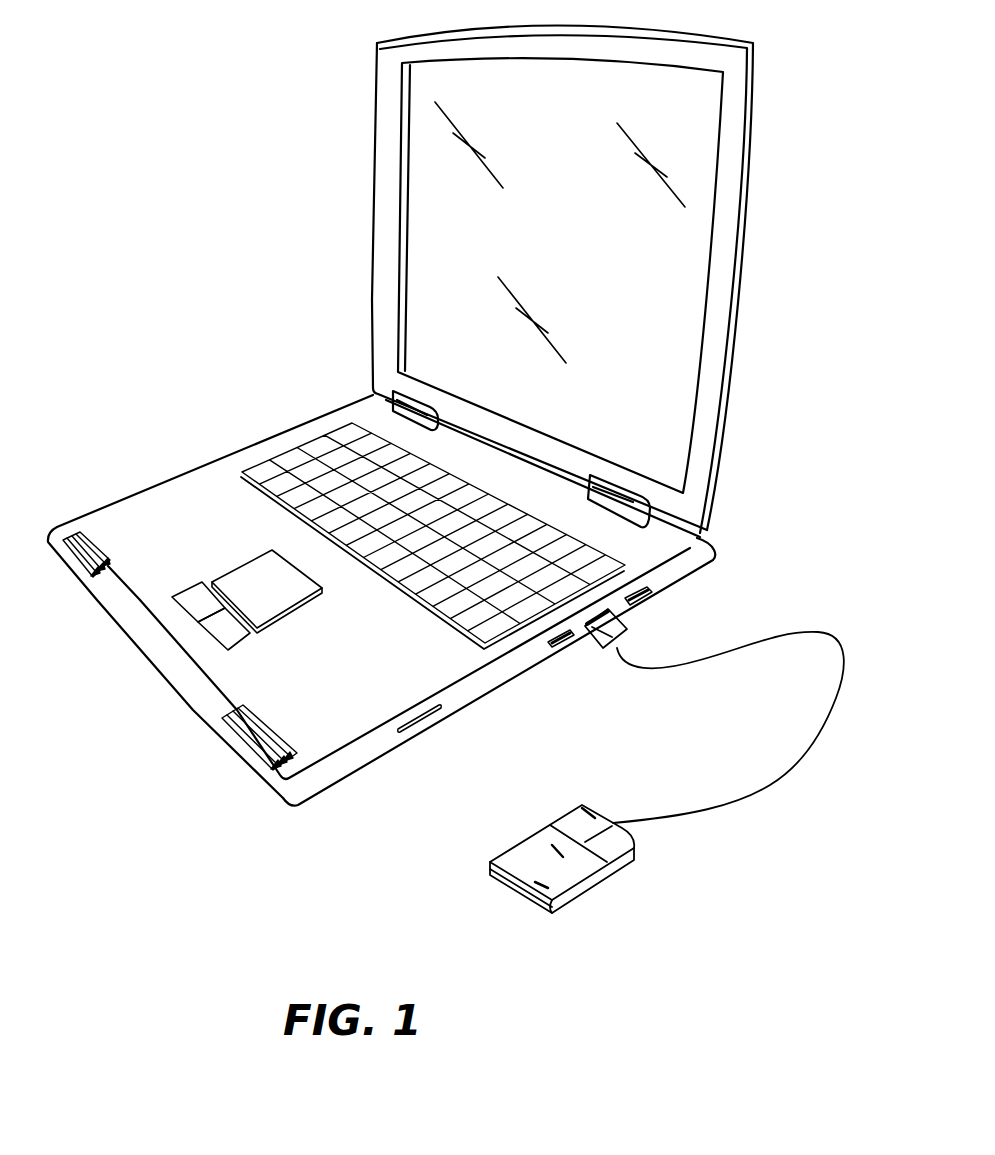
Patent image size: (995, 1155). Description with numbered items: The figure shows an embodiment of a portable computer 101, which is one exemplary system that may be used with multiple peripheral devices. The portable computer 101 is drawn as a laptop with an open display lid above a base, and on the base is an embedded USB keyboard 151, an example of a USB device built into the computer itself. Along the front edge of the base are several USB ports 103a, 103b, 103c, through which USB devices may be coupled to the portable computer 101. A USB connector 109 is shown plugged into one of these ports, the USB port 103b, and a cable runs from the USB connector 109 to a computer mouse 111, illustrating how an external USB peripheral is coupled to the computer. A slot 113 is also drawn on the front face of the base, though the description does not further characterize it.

The portable computer 101 is at (777, 112).
The embedded USB keyboard 151 is at (353, 485).
The slot 113 is at (420, 720).
The USB port 103a is at (549, 651).
The USB port 103b is at (593, 640).
The USB port 103c is at (658, 592).
The USB connector 109 is at (620, 633).
The computer mouse 111 is at (585, 860).